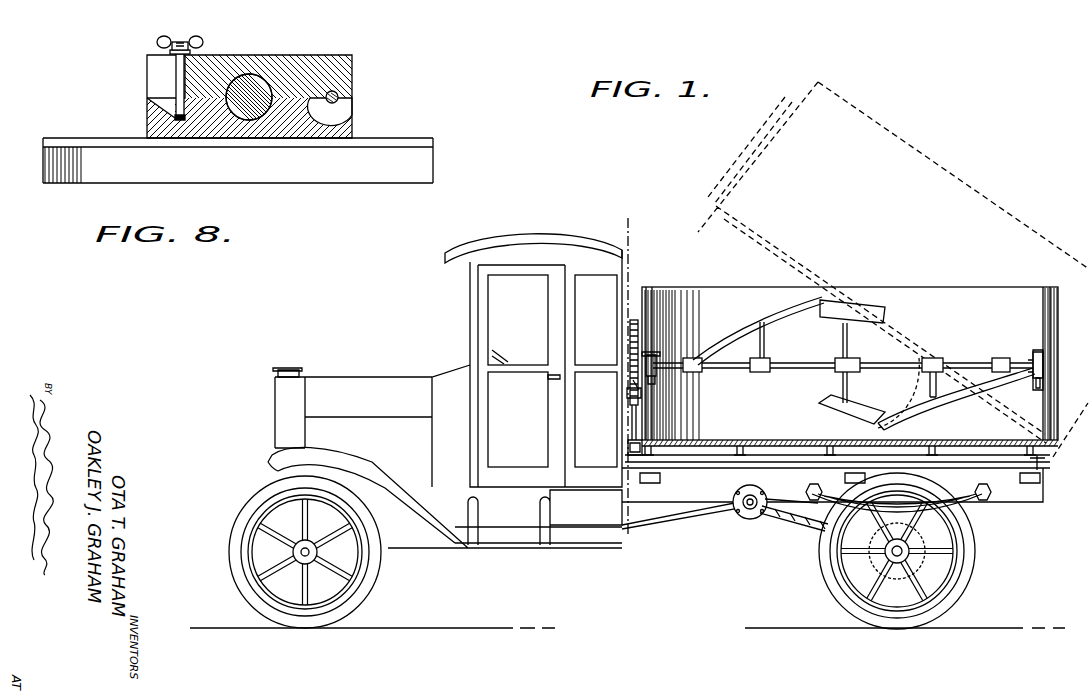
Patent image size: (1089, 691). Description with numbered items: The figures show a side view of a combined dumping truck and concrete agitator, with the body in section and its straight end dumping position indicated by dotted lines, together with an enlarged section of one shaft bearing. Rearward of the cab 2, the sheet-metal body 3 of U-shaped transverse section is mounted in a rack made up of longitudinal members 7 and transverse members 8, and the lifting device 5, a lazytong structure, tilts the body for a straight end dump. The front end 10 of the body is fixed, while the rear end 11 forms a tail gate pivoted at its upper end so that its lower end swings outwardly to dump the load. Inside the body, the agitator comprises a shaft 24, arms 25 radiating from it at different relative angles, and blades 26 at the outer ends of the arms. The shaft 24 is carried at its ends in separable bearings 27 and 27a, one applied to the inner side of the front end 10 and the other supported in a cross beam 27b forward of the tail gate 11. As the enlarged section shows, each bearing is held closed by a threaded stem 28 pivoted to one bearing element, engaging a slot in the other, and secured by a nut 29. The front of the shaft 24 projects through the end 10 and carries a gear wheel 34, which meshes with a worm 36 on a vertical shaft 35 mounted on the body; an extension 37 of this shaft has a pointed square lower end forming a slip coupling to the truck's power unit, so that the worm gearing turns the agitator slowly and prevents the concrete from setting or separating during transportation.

In FIG. 1, the cab 2 is at (533, 360).
In FIG. 1, the body 3 is at (964, 293).
In FIG. 1, the lifting device 5 is at (918, 424).
In FIG. 1, the longitudinal members 7 is at (1040, 462).
In FIG. 1, the transverse members 8 is at (740, 453).
In FIG. 1, the front end 10 is at (648, 288).
In FIG. 1, the rear end 11 is at (1058, 330).
In FIG. 8, the shaft 24 is at (255, 80).
In FIG. 1, the shaft 24 is at (752, 373).
In FIG. 1, the arms 25 is at (766, 347).
In FIG. 1, the blades 26 is at (855, 300).
In FIG. 8, the bearing 27 is at (352, 60).
In FIG. 1, the bearing 27 is at (660, 358).
In FIG. 1, the bearing 27a is at (1035, 360).
In FIG. 8, the cross beam 27b is at (310, 175).
In FIG. 8, the threaded stem 28 is at (172, 38).
In FIG. 8, the nut 29 is at (202, 40).
In FIG. 1, the gear wheel 34 is at (627, 393).
In FIG. 1, the vertical shaft 35 is at (631, 425).
In FIG. 1, the worm 36 is at (628, 351).
In FIG. 1, the extension 37 is at (628, 452).